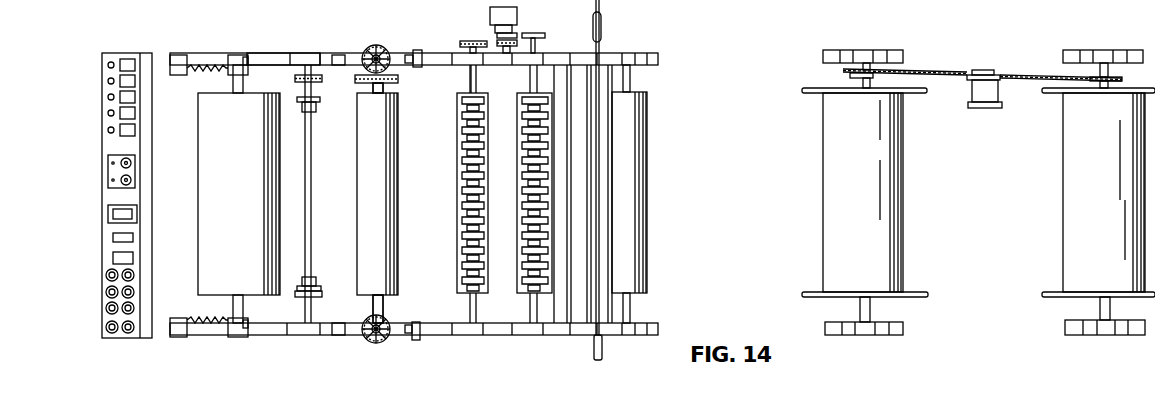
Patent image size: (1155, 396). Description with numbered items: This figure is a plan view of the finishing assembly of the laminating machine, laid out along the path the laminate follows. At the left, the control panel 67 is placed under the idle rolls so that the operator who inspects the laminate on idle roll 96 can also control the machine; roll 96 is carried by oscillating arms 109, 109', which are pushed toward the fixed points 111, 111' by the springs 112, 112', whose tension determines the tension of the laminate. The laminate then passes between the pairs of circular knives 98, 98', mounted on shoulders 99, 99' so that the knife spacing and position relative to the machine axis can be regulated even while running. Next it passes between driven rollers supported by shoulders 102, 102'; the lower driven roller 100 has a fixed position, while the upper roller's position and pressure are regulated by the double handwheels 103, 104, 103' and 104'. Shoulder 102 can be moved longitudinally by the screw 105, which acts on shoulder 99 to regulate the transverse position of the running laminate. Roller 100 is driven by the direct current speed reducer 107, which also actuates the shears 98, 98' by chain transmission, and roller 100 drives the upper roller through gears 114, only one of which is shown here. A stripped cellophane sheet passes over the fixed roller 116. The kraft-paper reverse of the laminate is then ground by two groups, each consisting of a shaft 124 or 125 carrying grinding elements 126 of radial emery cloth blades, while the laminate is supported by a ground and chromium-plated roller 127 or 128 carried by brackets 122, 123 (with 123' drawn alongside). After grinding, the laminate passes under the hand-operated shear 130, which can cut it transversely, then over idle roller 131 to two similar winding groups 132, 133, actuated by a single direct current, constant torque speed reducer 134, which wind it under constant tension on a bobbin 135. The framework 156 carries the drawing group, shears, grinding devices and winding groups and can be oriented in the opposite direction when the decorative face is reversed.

The control panel 67 is at (145, 60).
The idle roll 96 is at (200, 246).
The circular knife 98 is at (318, 262).
The circular knife 98' is at (292, 132).
The shoulder 99 is at (414, 345).
The shoulder 99' is at (283, 45).
The driven roller 100 is at (395, 222).
The shoulder 102 is at (362, 342).
The shoulder 102' is at (370, 47).
The double handwheel 103 is at (409, 92).
The double handwheel 104 is at (407, 101).
The double handwheel 103' is at (409, 305).
The double handwheel 104' is at (409, 309).
The screw 105 is at (412, 340).
The direct current speed reducer 107 is at (518, 17).
The oscillating arm 109 is at (237, 343).
The oscillating arm 109' is at (246, 47).
The fixed point 111 is at (178, 315).
The fixed point 111' is at (180, 49).
The spring 112 is at (201, 343).
The spring 112' is at (207, 52).
The gear 114 is at (352, 84).
The fixed roller 116 is at (338, 60).
The bracket 122 is at (458, 56).
The bracket 123 is at (571, 285).
The rod 123' is at (572, 112).
The shaft 124 is at (465, 82).
The shaft 125 is at (531, 79).
The grinding element 126 is at (522, 324).
The roller 127 is at (480, 268).
The roller 128 is at (540, 292).
The hand-operated shear 130 is at (604, 41).
The idle roller 131 is at (648, 128).
The winding group 132 is at (850, 332).
The winding group 133 is at (1093, 336).
The direct current constant torque speed reducer 134 is at (981, 108).
The bobbin 135 is at (1064, 211).
The framework 156 is at (600, 28).